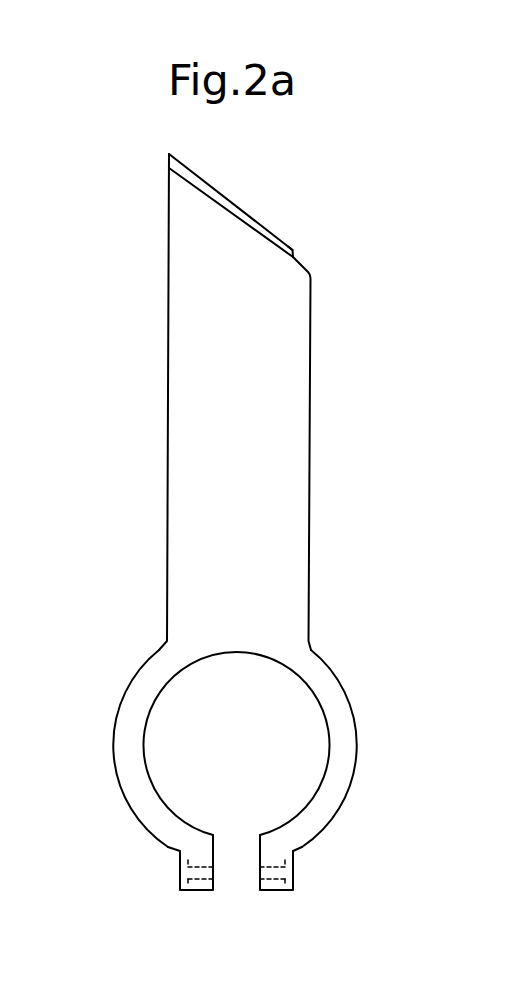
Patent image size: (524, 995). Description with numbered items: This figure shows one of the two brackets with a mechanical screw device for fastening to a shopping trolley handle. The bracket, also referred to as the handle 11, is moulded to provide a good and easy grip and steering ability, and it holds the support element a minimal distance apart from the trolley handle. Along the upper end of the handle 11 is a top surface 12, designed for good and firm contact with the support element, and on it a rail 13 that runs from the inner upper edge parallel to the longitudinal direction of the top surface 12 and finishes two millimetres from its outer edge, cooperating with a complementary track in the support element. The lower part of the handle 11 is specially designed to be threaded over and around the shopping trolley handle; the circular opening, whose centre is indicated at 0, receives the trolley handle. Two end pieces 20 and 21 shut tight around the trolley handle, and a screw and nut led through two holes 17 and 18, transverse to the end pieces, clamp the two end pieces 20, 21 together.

The handle 11 is at (206, 417).
The rail 13 is at (241, 193).
The top surface 12 is at (304, 241).
The center of circular opening 0 is at (236, 639).
The end piece 20 is at (354, 722).
The end piece 21 is at (114, 743).
The hole 17 is at (157, 873).
The hole 18 is at (316, 873).